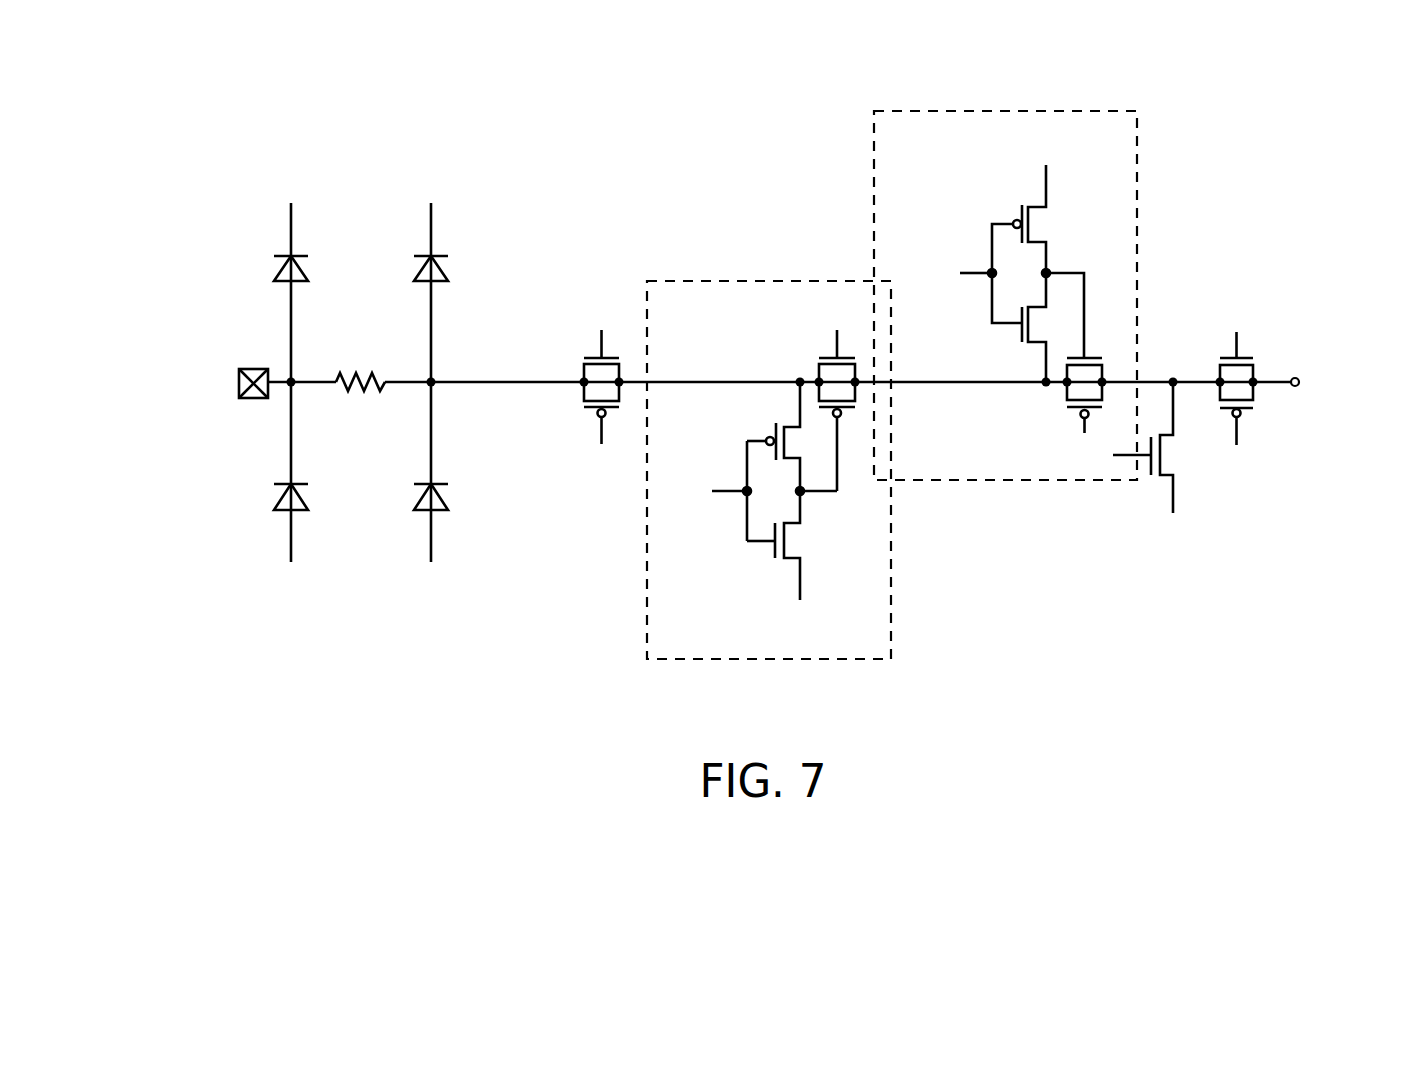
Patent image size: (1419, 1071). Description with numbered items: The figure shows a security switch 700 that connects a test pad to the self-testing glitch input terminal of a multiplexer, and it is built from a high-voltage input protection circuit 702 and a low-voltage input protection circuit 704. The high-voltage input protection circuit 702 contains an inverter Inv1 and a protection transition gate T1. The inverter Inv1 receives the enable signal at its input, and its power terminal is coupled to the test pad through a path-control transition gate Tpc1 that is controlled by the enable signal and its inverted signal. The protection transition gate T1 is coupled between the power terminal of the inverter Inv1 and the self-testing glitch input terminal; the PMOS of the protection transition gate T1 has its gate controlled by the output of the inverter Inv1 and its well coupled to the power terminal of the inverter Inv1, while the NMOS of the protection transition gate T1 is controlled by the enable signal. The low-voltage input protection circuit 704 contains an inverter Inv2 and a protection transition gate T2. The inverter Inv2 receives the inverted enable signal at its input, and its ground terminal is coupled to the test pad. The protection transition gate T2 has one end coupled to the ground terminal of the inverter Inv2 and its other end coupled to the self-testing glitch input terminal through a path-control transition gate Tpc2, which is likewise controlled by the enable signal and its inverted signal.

The security switch 700 is at (102, 74).
The high-voltage input protection circuit 702 is at (648, 276).
The low-voltage input protection circuit 704 is at (1005, 482).
The path-control transition gate Tpc1 is at (569, 403).
The protection transition gate T1 is at (803, 362).
The inverter Inv1 is at (733, 565).
The inverter Inv2 is at (980, 202).
The protection transition gate T2 is at (1050, 405).
The path-control transition gate Tpc2 is at (1260, 362).